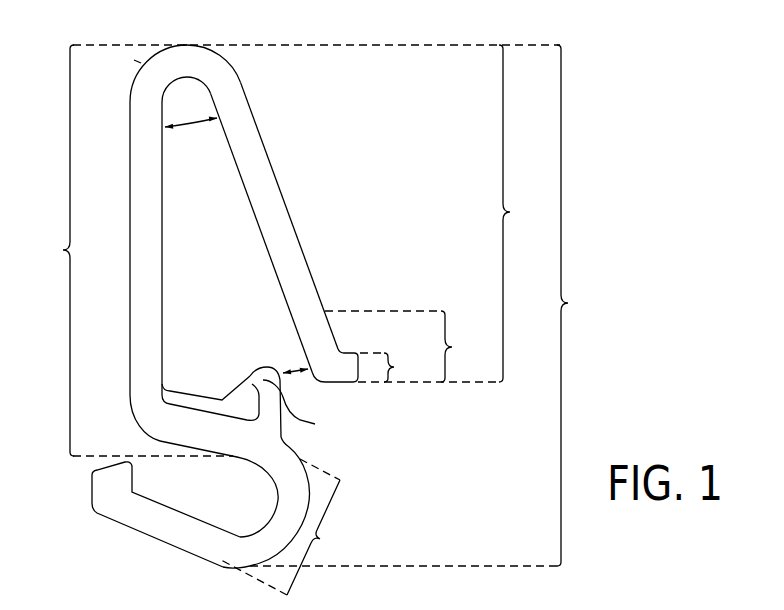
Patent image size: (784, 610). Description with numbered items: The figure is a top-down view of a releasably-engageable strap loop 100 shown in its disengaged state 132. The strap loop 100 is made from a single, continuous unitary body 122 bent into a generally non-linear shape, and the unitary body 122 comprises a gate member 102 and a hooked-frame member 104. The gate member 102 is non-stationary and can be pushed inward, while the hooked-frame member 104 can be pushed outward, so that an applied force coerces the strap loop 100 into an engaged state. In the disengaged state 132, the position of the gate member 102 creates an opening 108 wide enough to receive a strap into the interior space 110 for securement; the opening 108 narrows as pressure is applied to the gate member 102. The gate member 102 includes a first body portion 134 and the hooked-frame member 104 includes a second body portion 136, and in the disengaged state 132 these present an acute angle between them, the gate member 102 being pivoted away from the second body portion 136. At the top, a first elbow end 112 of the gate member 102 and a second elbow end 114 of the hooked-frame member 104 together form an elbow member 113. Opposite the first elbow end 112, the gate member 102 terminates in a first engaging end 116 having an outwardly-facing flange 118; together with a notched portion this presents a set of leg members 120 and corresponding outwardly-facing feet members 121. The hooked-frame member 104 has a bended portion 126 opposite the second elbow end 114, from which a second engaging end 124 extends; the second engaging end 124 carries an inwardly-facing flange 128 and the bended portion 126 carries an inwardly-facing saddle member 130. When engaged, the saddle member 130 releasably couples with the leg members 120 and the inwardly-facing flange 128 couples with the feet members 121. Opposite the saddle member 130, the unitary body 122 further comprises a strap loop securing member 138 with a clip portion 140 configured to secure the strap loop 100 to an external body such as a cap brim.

The releasably-engageable strap loop 100 is at (698, 117).
The gate member 102 is at (453, 213).
The hooked-frame member 104 is at (129, 250).
The opening 108 is at (281, 366).
The space 110 is at (229, 255).
The first elbow end 112 is at (232, 63).
The elbow member 113 is at (183, 44).
The second elbow end 114 is at (141, 63).
The first engaging end 116 is at (407, 346).
The outwardly-facing flange 118 is at (396, 367).
The set of leg members 120 is at (318, 334).
The set of outwardly-facing feet members 121 is at (343, 368).
The unitary body 122 is at (338, 305).
The second engaging end 124 is at (165, 368).
The bended portion 126 is at (142, 421).
The inwardly-facing flange 128 is at (300, 402).
The inwardly-facing saddle member 130 is at (207, 403).
The disengaged state 132 is at (293, 397).
The first body portion 134 is at (258, 184).
The second body portion 136 is at (148, 223).
The strap loop securing member 138 is at (259, 516).
The clip portion 140 is at (98, 474).